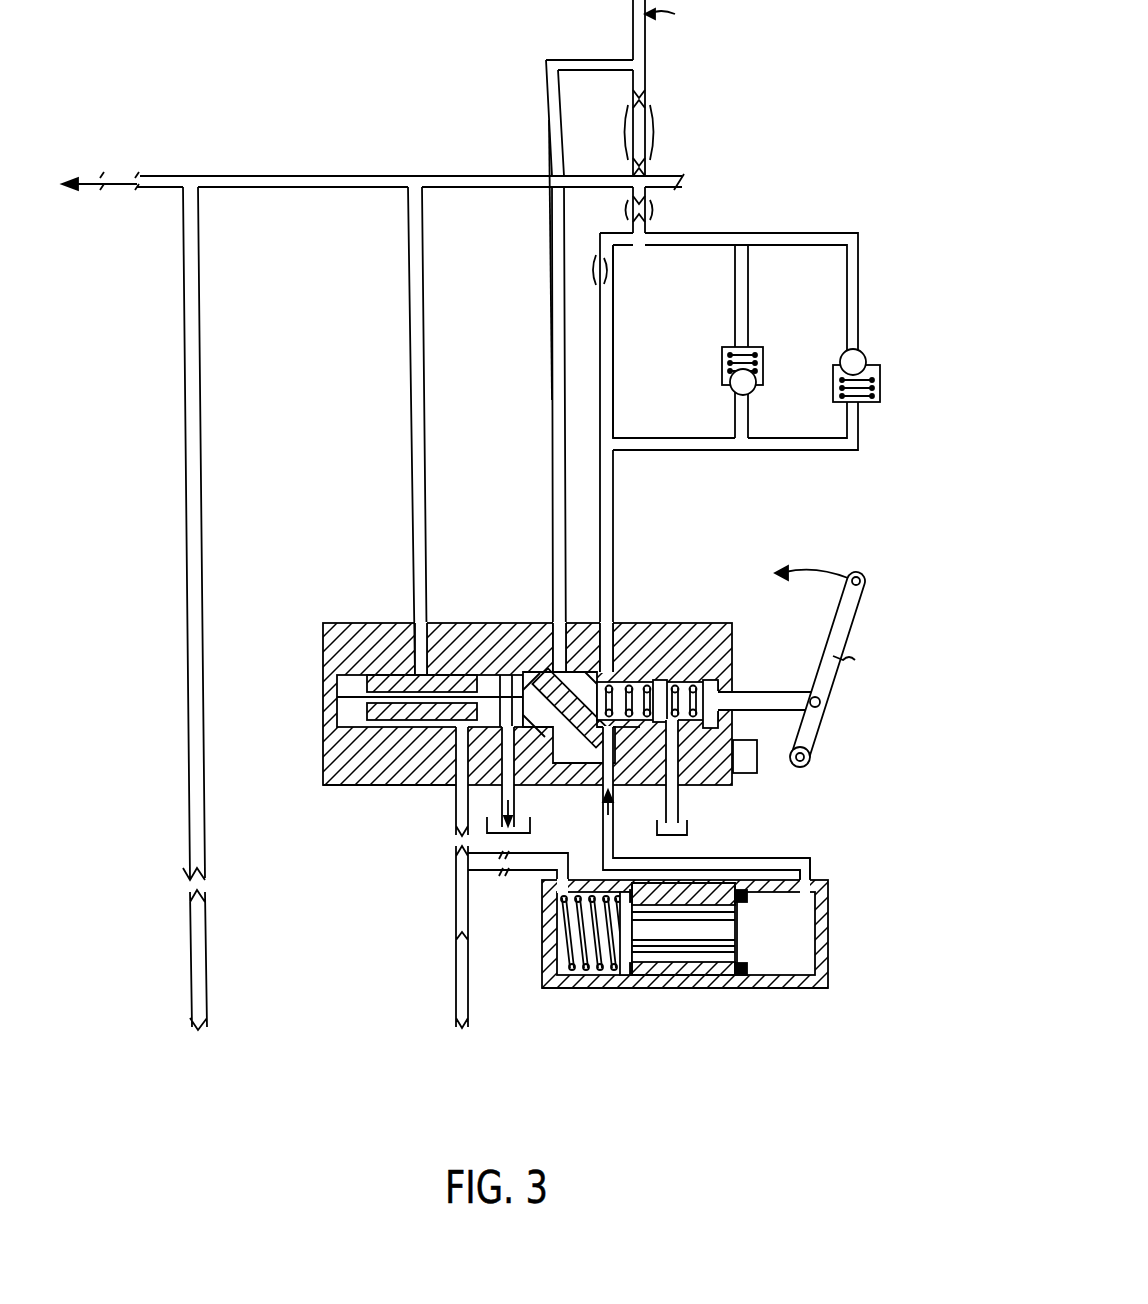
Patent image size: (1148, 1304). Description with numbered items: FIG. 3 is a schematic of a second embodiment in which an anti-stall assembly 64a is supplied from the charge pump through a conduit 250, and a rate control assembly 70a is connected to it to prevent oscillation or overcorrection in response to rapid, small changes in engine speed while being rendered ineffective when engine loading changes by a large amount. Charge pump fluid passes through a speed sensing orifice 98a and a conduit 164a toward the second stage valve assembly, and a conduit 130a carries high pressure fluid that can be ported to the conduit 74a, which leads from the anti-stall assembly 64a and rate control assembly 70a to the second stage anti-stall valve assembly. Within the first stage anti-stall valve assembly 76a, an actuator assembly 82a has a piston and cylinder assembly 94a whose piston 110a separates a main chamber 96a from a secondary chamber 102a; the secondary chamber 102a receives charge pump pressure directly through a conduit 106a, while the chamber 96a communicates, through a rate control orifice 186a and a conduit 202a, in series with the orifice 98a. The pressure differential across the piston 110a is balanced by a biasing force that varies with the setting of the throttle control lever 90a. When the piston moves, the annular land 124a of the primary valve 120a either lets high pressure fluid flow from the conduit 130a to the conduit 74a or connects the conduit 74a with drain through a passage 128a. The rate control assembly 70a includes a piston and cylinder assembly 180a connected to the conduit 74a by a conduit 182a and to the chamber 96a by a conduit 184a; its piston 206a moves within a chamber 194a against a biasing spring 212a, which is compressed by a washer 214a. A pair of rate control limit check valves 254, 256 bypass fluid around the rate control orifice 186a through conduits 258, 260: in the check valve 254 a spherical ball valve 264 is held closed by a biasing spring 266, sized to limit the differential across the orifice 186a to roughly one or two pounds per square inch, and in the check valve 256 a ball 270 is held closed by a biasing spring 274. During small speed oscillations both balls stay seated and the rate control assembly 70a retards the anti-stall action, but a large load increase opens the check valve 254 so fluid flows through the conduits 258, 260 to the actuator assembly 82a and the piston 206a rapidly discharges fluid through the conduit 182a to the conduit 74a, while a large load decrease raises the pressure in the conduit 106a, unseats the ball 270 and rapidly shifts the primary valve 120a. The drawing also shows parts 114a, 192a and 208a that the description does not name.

The conduit 250 is at (635, 58).
The conduit 106a is at (546, 120).
The speed sensing orifice 98a is at (650, 128).
The conduit 202a is at (650, 214).
The conduit 130a is at (408, 234).
The rate control orifice 186a is at (614, 270).
The conduit 258 is at (860, 242).
The rate control limit check valve 256 is at (785, 352).
The rate control limit check valve 254 is at (885, 352).
The biasing spring 274 is at (722, 358).
The spherical ball valve 270 is at (738, 385).
The spherical ball valve 264 is at (866, 360).
The biasing spring 266 is at (868, 404).
The conduit 260 is at (740, 450).
The actuator assembly 82a is at (640, 648).
The piston 110a is at (640, 610).
The throttle control lever 90a is at (850, 618).
The spring chamber and rod 114a is at (720, 675).
The secondary chamber 102a is at (560, 712).
The primary valve 120a is at (340, 705).
The annular land 124a is at (455, 725).
The main chamber 96a is at (608, 748).
The first stage anti-stall valve assembly 76a is at (530, 698).
The passage 128a is at (456, 816).
The piston and cylinder assembly 94a is at (604, 800).
The conduit 184a is at (680, 832).
The conduit 164a is at (190, 938).
The anti-stall assembly 64a is at (170, 960).
The conduit 74a is at (456, 930).
The conduit 182a is at (508, 872).
The biasing spring 212a is at (565, 945).
The cylinder housing 192a is at (560, 988).
The washer 214a is at (625, 975).
The piston 208a is at (690, 975).
The piston 206a is at (800, 935).
The piston and cylinder assembly 180a is at (838, 895).
The chamber 194a is at (828, 925).
The rate control assembly 70a is at (731, 943).